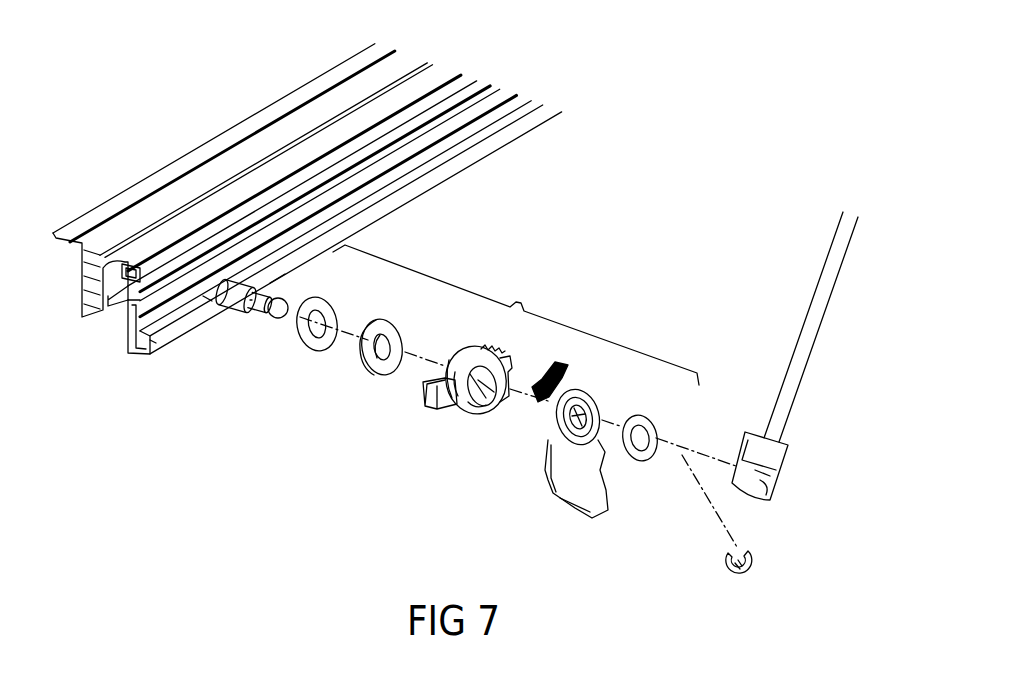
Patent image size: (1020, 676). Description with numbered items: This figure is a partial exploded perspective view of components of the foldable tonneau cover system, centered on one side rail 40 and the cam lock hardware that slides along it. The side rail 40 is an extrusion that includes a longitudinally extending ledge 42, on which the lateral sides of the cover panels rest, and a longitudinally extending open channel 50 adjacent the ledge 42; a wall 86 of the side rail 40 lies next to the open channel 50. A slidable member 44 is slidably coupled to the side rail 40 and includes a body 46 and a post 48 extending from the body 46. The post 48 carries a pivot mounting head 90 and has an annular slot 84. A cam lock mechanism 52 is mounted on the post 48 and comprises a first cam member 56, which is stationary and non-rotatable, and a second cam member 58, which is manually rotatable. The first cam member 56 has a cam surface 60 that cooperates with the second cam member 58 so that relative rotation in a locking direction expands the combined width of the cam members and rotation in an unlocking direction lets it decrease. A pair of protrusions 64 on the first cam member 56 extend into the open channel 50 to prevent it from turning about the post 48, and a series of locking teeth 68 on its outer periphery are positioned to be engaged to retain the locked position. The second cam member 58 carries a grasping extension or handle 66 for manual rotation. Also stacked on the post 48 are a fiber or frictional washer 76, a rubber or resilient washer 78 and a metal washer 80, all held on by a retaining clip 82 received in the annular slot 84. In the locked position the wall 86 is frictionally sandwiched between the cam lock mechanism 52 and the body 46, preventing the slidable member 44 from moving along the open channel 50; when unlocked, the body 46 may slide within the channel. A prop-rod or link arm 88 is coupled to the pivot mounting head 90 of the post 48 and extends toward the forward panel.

The side rail 40 is at (222, 130).
The ledge 42 is at (130, 266).
The slidable member 44 is at (277, 282).
The body 46 is at (207, 300).
The post 48 is at (237, 312).
The open channel 50 is at (122, 337).
The cam lock mechanism 52 is at (516, 315).
The first cam member 56 is at (432, 408).
The second cam member 58 is at (600, 444).
The cam surface 60 is at (482, 403).
The protrusions 64 is at (450, 385).
The handle 66 is at (593, 487).
The locking tooth 68 is at (483, 348).
The frictional washer 76 is at (310, 345).
The resilient washer 78 is at (362, 367).
The metal washer 80 is at (652, 432).
The retaining clip 82 is at (748, 577).
The annular slot 84 is at (243, 307).
The wall 86 is at (157, 357).
The link arm 88 is at (805, 333).
The pivot mounting head 90 is at (283, 306).